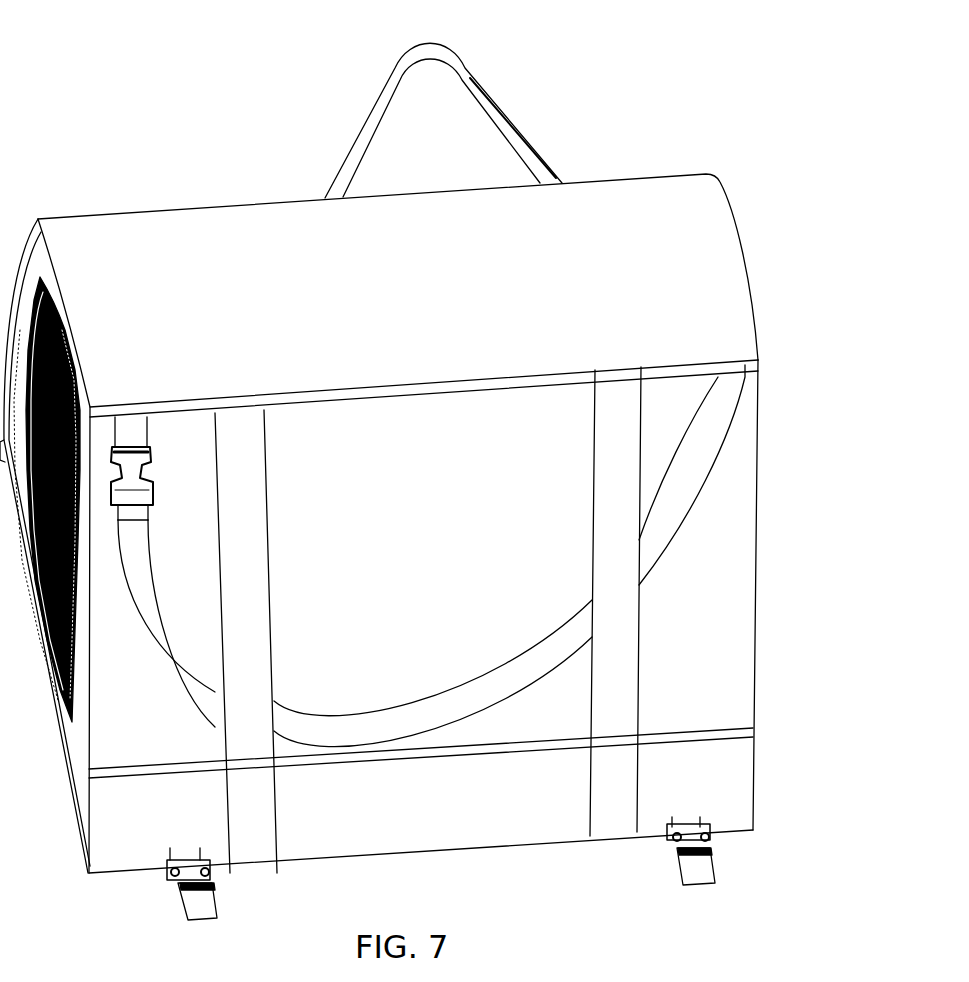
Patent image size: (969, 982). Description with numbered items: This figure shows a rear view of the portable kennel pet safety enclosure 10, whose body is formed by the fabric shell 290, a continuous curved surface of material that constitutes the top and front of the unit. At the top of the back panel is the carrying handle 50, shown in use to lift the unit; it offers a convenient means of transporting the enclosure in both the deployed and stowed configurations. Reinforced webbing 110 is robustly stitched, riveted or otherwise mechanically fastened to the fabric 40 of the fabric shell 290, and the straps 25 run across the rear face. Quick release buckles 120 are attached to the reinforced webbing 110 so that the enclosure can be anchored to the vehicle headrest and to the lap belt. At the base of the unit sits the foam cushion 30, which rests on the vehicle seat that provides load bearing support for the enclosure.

The portable kennel pet safety enclosure 10 is at (700, 695).
The vertical straps 25 is at (245, 468).
The foam cushion 30 is at (513, 815).
The fabric 40 is at (715, 630).
The carrying handle 50 is at (365, 113).
The reinforced webbing 110 is at (548, 177).
The quick release buckle 120 is at (133, 475).
The fabric shell 290 is at (645, 230).